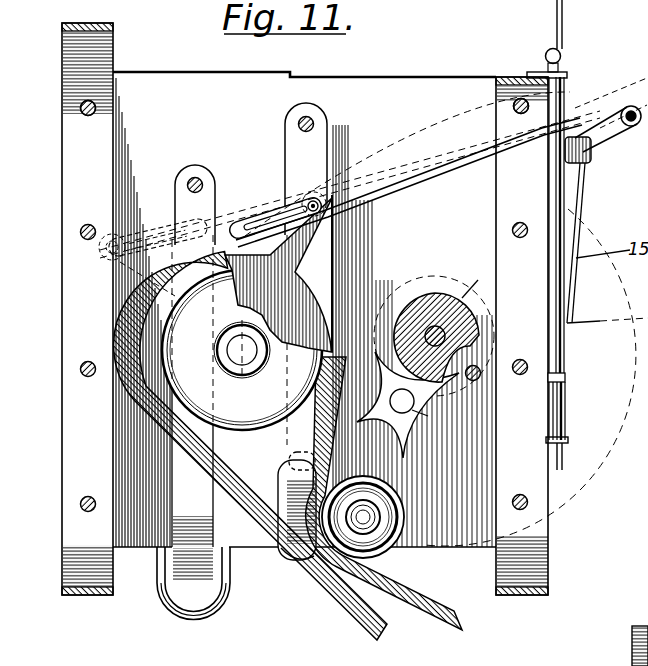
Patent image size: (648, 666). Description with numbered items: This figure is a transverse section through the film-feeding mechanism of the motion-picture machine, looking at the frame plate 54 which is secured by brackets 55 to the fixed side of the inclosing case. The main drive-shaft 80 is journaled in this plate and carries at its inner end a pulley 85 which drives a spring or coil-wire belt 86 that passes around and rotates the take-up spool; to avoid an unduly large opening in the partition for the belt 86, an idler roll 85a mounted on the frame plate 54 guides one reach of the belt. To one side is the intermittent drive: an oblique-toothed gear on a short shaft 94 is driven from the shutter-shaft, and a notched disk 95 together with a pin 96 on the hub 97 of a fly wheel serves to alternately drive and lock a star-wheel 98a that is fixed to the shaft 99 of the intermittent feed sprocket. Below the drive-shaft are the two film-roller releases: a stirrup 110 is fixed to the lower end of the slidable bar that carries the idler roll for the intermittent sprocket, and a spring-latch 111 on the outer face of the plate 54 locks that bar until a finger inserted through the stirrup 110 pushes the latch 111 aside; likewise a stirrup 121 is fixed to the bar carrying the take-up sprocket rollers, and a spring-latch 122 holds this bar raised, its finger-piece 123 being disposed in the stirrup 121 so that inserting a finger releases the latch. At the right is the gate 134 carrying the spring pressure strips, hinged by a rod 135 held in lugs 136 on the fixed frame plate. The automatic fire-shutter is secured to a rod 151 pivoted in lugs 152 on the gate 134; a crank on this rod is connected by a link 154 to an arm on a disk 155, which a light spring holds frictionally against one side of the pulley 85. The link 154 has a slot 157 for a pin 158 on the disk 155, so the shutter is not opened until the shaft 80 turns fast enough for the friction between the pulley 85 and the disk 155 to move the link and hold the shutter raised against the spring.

The plate 54 is at (380, 369).
The brackets 55 is at (305, 309).
The main drive-shaft 80 is at (245, 357).
The pulley 85 is at (228, 365).
The idler roll 85a is at (345, 520).
The spring or coil-wire belt 86 is at (380, 622).
The short shaft 94 is at (437, 330).
The notched disk 95 is at (475, 280).
The pin 96 is at (479, 369).
The hub 97 is at (384, 300).
The star-wheel 98a is at (427, 412).
The shaft 99 is at (399, 410).
The stirrup 110 is at (279, 546).
The spring-latch 111 is at (296, 572).
The stirrup 121 is at (166, 596).
The spring-latch 122 is at (192, 463).
The finger-piece 123 is at (200, 600).
The gate 134 is at (567, 352).
The rod 135 is at (566, 372).
The lugs 136 is at (567, 75).
The rod 151 is at (583, 166).
The lugs 152 is at (598, 150).
The link 154 is at (455, 170).
The disk 155 is at (300, 296).
The slot 157 is at (254, 218).
The pin 158 is at (320, 203).